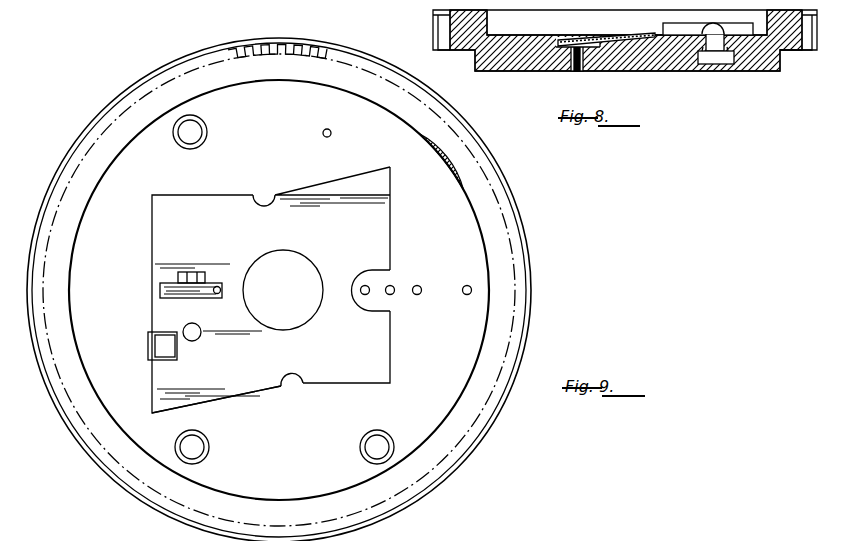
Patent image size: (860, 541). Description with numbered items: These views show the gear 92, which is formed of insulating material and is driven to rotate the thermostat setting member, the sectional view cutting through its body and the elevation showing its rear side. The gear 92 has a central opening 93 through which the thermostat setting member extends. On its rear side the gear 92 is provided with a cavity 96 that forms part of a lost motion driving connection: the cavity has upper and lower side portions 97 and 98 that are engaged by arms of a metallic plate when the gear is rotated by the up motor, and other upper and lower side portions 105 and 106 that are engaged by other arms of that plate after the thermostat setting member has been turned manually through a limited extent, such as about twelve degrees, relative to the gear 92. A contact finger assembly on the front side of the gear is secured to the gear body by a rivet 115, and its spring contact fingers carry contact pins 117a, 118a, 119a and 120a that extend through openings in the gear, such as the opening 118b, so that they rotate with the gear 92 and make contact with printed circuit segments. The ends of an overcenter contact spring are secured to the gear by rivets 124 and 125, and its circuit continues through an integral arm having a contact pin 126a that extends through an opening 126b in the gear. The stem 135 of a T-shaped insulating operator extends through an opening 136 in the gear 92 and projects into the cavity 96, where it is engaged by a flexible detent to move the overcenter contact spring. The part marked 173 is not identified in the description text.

In FIG. 8, the gear 92 is at (780, 62).
In FIG. 9, the gear 92 is at (470, 196).
In FIG. 9, the central opening 93 is at (298, 262).
In FIG. 9, the cavity 96 is at (385, 197).
In FIG. 9, the upper side portion 97 is at (262, 196).
In FIG. 9, the lower side portion 98 is at (325, 383).
In FIG. 9, the upper side portion 105 is at (333, 182).
In FIG. 9, the lower side portion 106 is at (243, 396).
In FIG. 9, the rivet 115 is at (372, 447).
In FIG. 9, the contact pin 117a is at (467, 295).
In FIG. 9, the contact pin 118a is at (420, 287).
In FIG. 9, the opening 118b is at (294, 34).
In FIG. 9, the contact pin 119a is at (392, 294).
In FIG. 9, the contact pin 120a is at (368, 287).
In FIG. 9, the rivet 124 is at (197, 455).
In FIG. 8, the rivet 125 is at (720, 55).
In FIG. 9, the rivet 125 is at (197, 125).
In FIG. 9, the contact pin 126a is at (323, 135).
In FIG. 8, the opening 126b is at (577, 72).
In FIG. 9, the stem 135 is at (160, 291).
In FIG. 9, the opening 136 is at (220, 286).
In FIG. 9, the contact block 173 is at (192, 272).